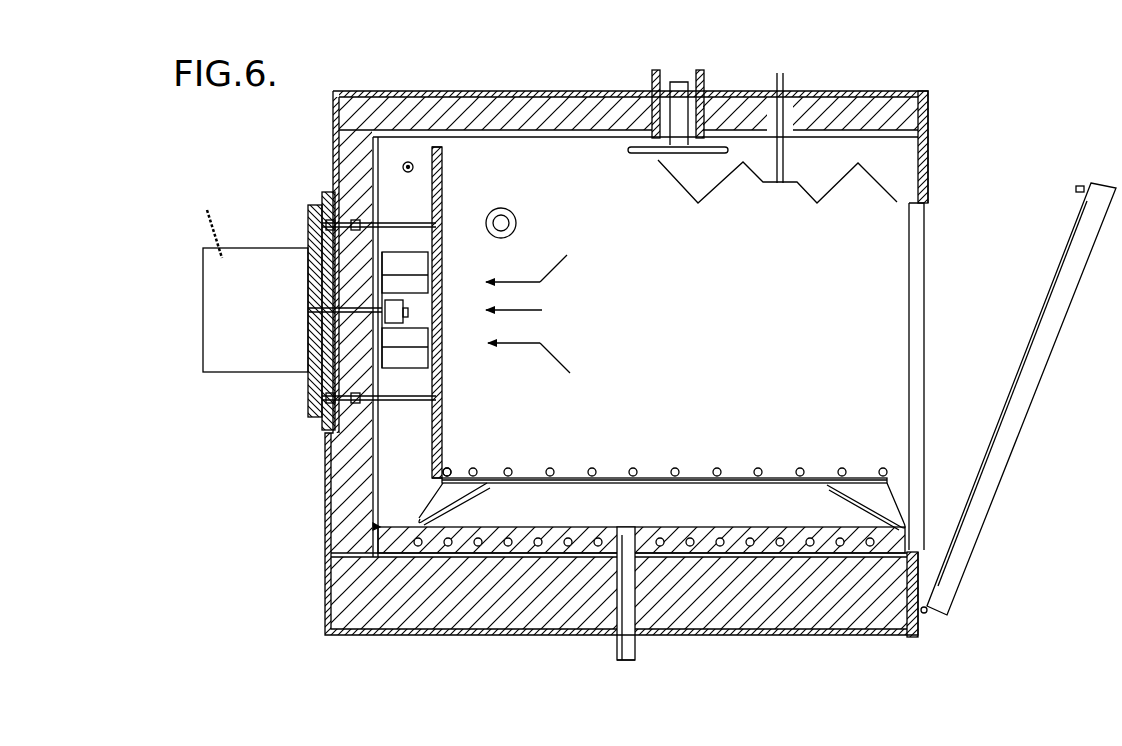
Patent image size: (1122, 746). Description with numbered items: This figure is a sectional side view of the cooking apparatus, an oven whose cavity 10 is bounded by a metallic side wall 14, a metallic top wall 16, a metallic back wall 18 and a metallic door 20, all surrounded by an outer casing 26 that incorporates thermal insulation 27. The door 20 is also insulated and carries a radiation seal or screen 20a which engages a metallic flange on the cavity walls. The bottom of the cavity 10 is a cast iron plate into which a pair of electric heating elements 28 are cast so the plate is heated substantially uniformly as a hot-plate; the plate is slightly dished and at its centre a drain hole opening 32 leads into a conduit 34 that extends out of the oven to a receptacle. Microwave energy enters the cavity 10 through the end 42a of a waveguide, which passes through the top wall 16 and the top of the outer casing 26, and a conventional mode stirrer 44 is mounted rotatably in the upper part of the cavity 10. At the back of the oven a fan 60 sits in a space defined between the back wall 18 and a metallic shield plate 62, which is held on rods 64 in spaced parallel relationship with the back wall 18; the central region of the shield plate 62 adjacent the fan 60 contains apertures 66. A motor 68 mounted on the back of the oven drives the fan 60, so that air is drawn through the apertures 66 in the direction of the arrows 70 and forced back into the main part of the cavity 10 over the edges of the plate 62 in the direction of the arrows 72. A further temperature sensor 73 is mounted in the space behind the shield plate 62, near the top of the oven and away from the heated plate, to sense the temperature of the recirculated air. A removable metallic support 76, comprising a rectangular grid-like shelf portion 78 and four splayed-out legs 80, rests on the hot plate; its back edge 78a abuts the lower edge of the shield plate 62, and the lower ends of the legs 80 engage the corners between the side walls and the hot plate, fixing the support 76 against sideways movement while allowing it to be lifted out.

The cavity 10 is at (858, 210).
The side wall 14 is at (692, 322).
The top wall 16 is at (573, 130).
The back wall 18 is at (380, 168).
The door 20 is at (1058, 279).
The radiation seal or screen 20a is at (1009, 384).
The outer casing 26 is at (498, 90).
The thermal insulation 27 is at (388, 105).
The electric heating elements 28 is at (567, 540).
The drain hole opening 32 is at (627, 530).
The conduit 34 is at (627, 583).
The end of the waveguide 42a is at (707, 81).
The mode stirrer 44 is at (783, 183).
The fan 60 is at (428, 255).
The shield plate 62 is at (443, 185).
The rods 64 is at (437, 223).
The apertures 66 is at (440, 330).
The motor 68 is at (268, 322).
The arrows 70 is at (516, 310).
The arrows 72 is at (430, 147).
The temperature sensor 73 is at (408, 172).
The metallic support 76 is at (612, 472).
The shelf portion 78 is at (680, 468).
The back edge 78a is at (448, 468).
The legs 80 is at (484, 487).